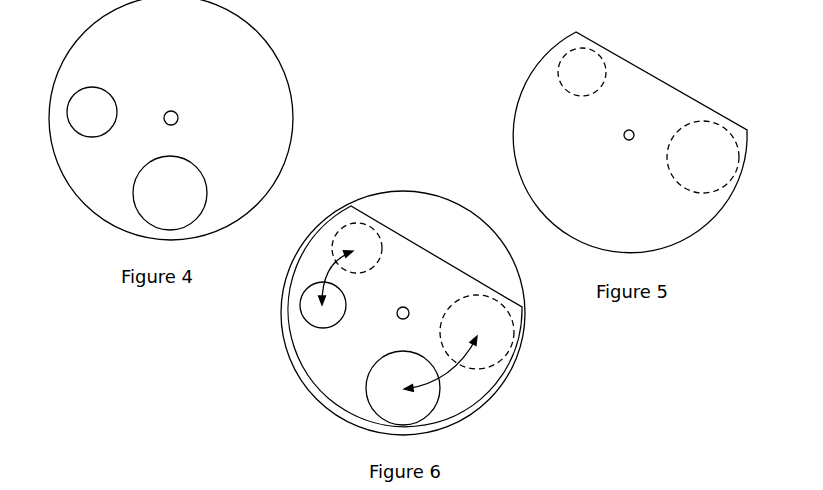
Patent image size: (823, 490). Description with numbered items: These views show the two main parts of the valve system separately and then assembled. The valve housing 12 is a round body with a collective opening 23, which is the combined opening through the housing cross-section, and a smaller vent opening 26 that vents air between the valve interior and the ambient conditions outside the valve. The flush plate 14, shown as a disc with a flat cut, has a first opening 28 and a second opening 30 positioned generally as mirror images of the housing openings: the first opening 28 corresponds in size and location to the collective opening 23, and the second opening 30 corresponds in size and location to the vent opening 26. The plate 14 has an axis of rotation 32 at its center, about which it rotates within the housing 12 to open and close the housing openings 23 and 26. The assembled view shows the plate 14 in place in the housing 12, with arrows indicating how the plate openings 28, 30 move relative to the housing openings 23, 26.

In FIG. 4, the valve housing 12 is at (235, 59).
In FIG. 6, the valve housing 12 is at (429, 228).
In FIG. 5, the flush plate 14 is at (680, 227).
In FIG. 6, the flush plate 14 is at (318, 358).
In FIG. 4, the collective opening 23 is at (159, 202).
In FIG. 6, the collective opening 23 is at (405, 408).
In FIG. 4, the vent opening 26 is at (81, 121).
In FIG. 6, the vent opening 26 is at (325, 310).
In FIG. 5, the first opening 28 is at (692, 166).
In FIG. 6, the first opening 28 is at (492, 337).
In FIG. 5, the second opening 30 is at (571, 81).
In FIG. 6, the second opening 30 is at (353, 245).
In FIG. 5, the axis of rotation 32 is at (633, 131).